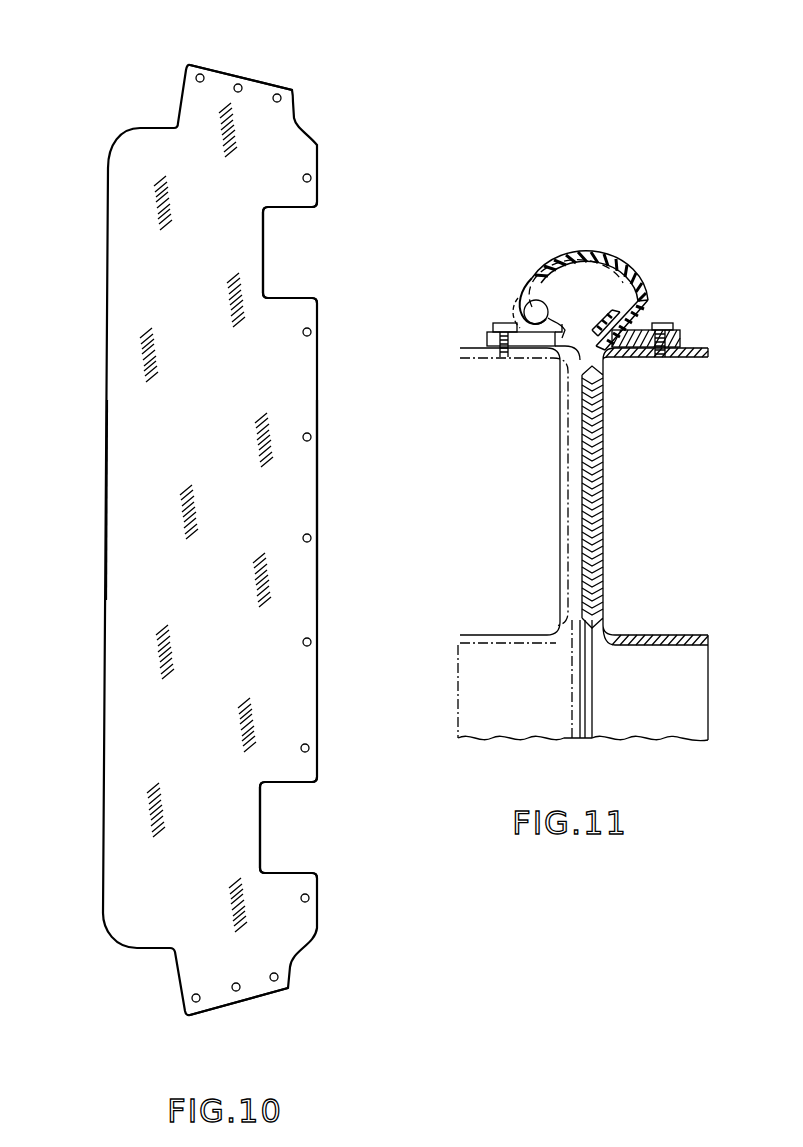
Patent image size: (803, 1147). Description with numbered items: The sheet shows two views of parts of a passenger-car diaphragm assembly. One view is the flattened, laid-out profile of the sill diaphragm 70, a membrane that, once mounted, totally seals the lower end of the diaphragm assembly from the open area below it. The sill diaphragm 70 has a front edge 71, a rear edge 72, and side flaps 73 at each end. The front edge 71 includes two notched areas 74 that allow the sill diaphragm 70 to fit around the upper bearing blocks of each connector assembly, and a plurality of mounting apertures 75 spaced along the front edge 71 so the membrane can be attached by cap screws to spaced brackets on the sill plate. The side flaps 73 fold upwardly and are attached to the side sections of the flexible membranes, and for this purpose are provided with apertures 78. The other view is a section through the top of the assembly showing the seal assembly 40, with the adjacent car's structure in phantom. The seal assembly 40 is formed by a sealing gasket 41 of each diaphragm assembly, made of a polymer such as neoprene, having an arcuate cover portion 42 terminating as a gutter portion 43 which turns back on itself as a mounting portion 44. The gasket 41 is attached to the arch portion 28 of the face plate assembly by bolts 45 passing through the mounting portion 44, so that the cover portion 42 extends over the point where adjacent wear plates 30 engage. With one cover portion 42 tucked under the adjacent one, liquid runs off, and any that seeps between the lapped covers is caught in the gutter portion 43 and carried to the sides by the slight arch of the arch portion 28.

In FIG. 10, the sill diaphragm 70 is at (101, 586).
In FIG. 10, the front edge 71 is at (318, 491).
In FIG. 10, the rear edge 72 is at (105, 490).
In FIG. 10, the side flaps 73 is at (233, 72).
In FIG. 10, the notched areas 74 is at (264, 250).
In FIG. 10, the mounting apertures 75 is at (311, 178).
In FIG. 10, the apertures 78 is at (198, 74).
In FIG. 11, the arch portion 28 is at (565, 452).
In FIG. 11, the wear plate 30 is at (590, 498).
In FIG. 11, the seal assembly 40 is at (598, 243).
In FIG. 11, the sealing gasket 41 is at (517, 293).
In FIG. 11, the arcuate cover portion 42 is at (567, 256).
In FIG. 11, the gutter portion 43 is at (537, 305).
In FIG. 11, the mounting portion 44 is at (537, 342).
In FIG. 11, the bolts 45 is at (504, 322).